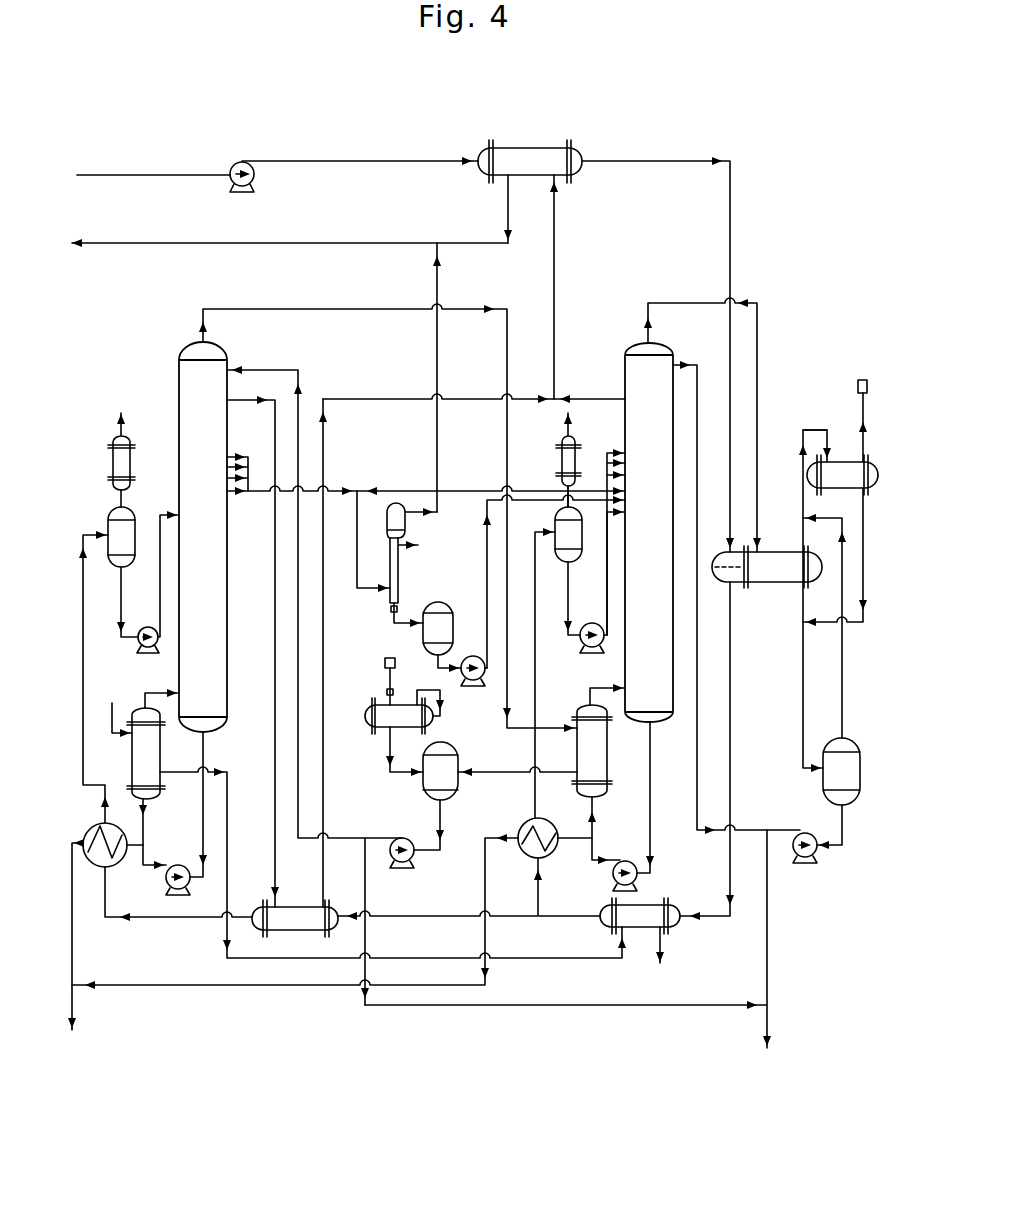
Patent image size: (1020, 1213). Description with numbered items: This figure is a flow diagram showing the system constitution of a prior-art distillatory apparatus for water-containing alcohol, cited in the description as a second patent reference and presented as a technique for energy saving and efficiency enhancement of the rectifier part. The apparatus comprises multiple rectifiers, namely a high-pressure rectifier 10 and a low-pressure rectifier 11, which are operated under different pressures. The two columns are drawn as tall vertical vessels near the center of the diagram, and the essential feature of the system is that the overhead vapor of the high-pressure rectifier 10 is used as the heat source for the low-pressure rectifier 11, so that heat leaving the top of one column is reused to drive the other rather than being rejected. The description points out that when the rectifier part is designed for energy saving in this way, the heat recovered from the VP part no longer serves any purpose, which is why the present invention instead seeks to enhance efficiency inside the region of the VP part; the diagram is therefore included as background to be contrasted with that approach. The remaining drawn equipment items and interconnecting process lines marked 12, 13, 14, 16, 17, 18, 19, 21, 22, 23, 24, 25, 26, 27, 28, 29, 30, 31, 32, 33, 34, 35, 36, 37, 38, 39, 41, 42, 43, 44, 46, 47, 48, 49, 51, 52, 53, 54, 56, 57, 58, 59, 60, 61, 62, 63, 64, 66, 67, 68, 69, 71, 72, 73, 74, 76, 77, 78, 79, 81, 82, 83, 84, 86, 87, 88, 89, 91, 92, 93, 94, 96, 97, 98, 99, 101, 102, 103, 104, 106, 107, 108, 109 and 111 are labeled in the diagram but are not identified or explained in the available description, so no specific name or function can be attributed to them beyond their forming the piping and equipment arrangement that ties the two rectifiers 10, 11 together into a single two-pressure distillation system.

The high-pressure rectifier 10 is at (210, 416).
The low-pressure rectifier 11 is at (655, 410).
The feed line 12 is at (120, 175).
The feed pump 13 is at (255, 178).
The line 14 is at (358, 163).
The heat exchanger 16 is at (525, 148).
The line 17 is at (730, 233).
The heat exchanger 18 is at (778, 574).
The line 19 is at (730, 736).
The cooler 21 is at (655, 905).
The line 22 is at (555, 916).
The line 23 is at (538, 888).
The heat exchanger 24 is at (524, 825).
The line 25 is at (568, 600).
The line 26 is at (535, 684).
The separator vessel 27 is at (556, 532).
The line 28 is at (560, 499).
The pump 29 is at (584, 645).
The line 30 is at (606, 579).
The vent condenser 31 is at (562, 463).
The pump 32 is at (633, 861).
The line 33 is at (592, 819).
The stripper vessel 34 is at (607, 749).
The bottoms line 35 is at (650, 776).
The line 36 is at (611, 688).
The line 37 is at (572, 838).
The line 38 is at (493, 873).
The product outlet line 39 is at (72, 956).
The overhead vapor line 41 is at (690, 303).
The line 42 is at (803, 678).
The reflux drum 43 is at (823, 780).
The line 44 is at (803, 495).
The condenser 46 is at (847, 462).
The line 47 is at (842, 668).
The line 48 is at (863, 548).
The pressure controller 49 is at (862, 398).
The line 51 is at (842, 826).
The reflux pump 52 is at (812, 858).
The line 53 is at (697, 672).
The outlet line 54 is at (767, 937).
The line 56 is at (600, 399).
The line 57 is at (380, 399).
The line 58 is at (554, 290).
The overhead outlet line 59 is at (333, 243).
The line 60 is at (273, 612).
The heat exchanger 61 is at (296, 928).
The line 62 is at (155, 918).
The heat exchanger 63 is at (115, 865).
The bottoms line 64 is at (205, 753).
The pump 66 is at (186, 865).
The line 67 is at (147, 828).
The vessel 68 is at (160, 752).
The line 69 is at (163, 690).
The line 71 is at (112, 703).
The line 72 is at (234, 826).
The line 73 is at (660, 939).
The line 74 is at (137, 834).
The line 76 is at (83, 660).
The vessel 77 is at (118, 525).
The line 78 is at (125, 497).
The vent condenser 79 is at (128, 465).
The line 81 is at (121, 597).
The pump 82 is at (149, 627).
The line 83 is at (160, 578).
The line 84 is at (412, 308).
The line 86 is at (520, 772).
The vessel 87 is at (454, 753).
The heat exchanger 88 is at (440, 719).
The line 89 is at (404, 705).
The line 91 is at (388, 753).
The controller 92 is at (388, 677).
The line 93 is at (437, 811).
The pump 94 is at (412, 856).
The line 96 is at (283, 372).
The line 97 is at (365, 883).
The line 98 is at (257, 492).
The line 99 is at (583, 490).
The line 101 is at (357, 540).
The vessel 102 is at (405, 523).
The stripper column 103 is at (418, 545).
The line 104 is at (437, 462).
The line 106 is at (390, 612).
The vessel 107 is at (450, 626).
The line 108 is at (436, 660).
The pump 109 is at (478, 681).
The line 111 is at (487, 577).